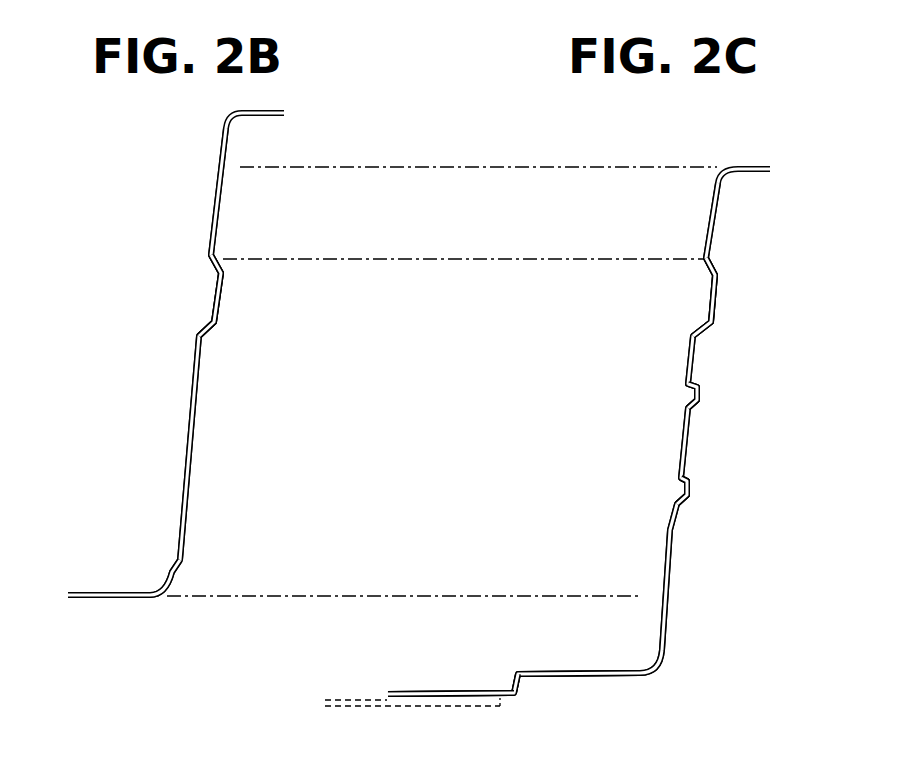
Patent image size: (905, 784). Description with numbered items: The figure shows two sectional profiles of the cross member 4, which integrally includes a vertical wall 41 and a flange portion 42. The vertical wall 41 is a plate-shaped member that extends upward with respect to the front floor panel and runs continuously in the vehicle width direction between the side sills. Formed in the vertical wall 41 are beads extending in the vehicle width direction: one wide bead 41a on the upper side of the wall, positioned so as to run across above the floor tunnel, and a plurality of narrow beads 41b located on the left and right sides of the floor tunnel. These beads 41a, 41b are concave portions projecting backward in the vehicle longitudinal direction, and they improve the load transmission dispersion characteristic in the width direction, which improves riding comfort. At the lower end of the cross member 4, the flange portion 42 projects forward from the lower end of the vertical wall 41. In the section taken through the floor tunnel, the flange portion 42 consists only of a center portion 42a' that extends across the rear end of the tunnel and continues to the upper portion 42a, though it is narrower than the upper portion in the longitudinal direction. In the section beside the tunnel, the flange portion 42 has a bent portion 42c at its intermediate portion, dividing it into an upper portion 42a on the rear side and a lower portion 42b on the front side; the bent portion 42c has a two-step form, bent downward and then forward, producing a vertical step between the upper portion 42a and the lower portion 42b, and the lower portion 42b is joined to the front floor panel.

In FIG. 2B, the cross member 4 is at (168, 147).
In FIG. 2C, the cross member 4 is at (676, 148).
In FIG. 2B, the vertical wall 41 is at (188, 392).
In FIG. 2C, the vertical wall 41 is at (702, 225).
In FIG. 2B, the wide bead 41a is at (217, 298).
In FIG. 2C, the wide bead 41a is at (705, 298).
In FIG. 2C, the narrow bead 41b is at (688, 398).
In FIG. 2B, the flange portion 42 is at (74, 572).
In FIG. 2C, the flange portion 42 is at (510, 612).
In FIG. 2C, the upper portion 42a is at (579, 641).
In FIG. 2B, the center portion 42a' is at (109, 564).
In FIG. 2C, the lower portion 42b is at (445, 692).
In FIG. 2C, the bent portion 42c is at (512, 672).